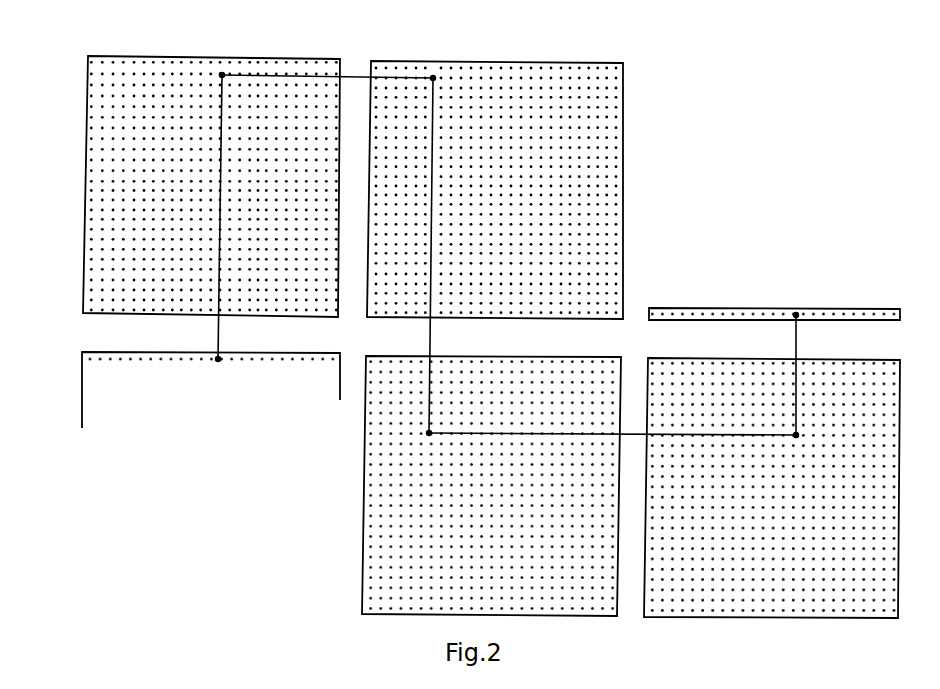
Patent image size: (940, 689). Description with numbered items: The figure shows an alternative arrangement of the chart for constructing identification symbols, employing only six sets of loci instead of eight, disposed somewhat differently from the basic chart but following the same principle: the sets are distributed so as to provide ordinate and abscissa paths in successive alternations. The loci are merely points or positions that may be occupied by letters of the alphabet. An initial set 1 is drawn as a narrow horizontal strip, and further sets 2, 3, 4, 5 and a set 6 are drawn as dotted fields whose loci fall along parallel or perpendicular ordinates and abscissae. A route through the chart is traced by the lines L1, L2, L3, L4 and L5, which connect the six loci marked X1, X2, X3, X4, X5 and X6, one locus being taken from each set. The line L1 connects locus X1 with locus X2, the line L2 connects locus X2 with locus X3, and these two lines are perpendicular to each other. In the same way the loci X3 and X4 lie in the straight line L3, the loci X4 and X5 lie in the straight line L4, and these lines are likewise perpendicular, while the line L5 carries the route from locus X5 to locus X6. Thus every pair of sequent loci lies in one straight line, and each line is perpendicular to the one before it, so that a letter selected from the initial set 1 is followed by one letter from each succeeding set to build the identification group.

The initial set of loci 1 is at (768, 308).
The intermediate set of loci 2 is at (900, 463).
The intermediate set of loci 3 is at (408, 617).
The intermediate set of loci 4 is at (623, 177).
The intermediate set of loci 5 is at (85, 182).
The set of loci 6 is at (82, 388).
The locus X1 is at (796, 313).
The locus X2 is at (796, 435).
The locus X3 is at (429, 433).
The locus X4 is at (433, 78).
The locus X5 is at (222, 75).
The locus X6 is at (218, 359).
The line L1 is at (796, 340).
The line L2 is at (633, 433).
The line L3 is at (430, 335).
The line L4 is at (352, 75).
The line L5 is at (218, 332).